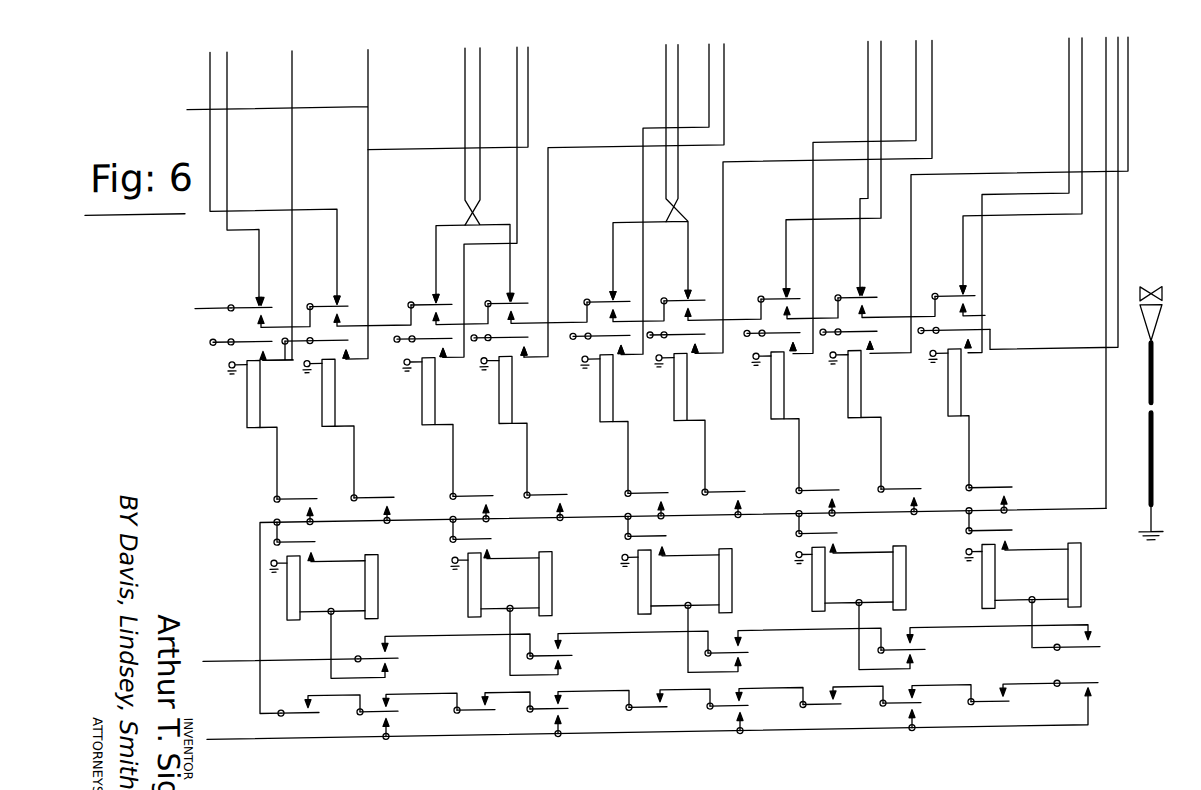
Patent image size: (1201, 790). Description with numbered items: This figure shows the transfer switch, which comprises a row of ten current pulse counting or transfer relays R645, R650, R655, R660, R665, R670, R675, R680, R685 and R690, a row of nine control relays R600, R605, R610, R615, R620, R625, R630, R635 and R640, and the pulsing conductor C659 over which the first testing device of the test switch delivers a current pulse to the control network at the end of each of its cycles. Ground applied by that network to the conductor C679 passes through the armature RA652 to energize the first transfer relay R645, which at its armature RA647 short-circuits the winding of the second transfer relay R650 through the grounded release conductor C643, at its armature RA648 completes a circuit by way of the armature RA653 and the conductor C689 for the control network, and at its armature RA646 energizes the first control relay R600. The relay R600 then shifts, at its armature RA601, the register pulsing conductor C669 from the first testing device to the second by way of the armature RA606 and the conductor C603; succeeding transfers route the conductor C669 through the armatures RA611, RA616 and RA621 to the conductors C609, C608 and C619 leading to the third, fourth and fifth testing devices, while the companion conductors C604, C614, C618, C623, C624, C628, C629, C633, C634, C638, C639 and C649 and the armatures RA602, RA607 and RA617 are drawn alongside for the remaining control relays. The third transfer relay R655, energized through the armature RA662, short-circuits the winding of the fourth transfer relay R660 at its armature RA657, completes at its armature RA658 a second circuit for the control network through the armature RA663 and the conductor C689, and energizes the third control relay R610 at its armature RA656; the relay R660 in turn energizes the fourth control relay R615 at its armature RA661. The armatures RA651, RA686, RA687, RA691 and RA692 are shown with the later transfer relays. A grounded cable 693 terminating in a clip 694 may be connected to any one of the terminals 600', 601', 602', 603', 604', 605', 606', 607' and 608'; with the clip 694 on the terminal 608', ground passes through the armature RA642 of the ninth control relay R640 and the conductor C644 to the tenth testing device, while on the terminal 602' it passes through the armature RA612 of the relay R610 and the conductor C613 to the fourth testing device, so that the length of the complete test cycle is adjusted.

The conductor C603 is at (210, 73).
The conductor C604 is at (227, 92).
The pulsing conductor C659 is at (368, 75).
The conductor C608 is at (465, 74).
The conductor C609 is at (480, 99).
The conductor C613 is at (528, 73).
The conductor C614 is at (528, 105).
The conductor C618 is at (666, 75).
The conductor C619 is at (678, 99).
The conductor C623 is at (709, 71).
The conductor C624 is at (724, 104).
The conductor C628 is at (868, 78).
The conductor C629 is at (881, 102).
The conductor C633 is at (916, 80).
The conductor C634 is at (932, 103).
The conductor C638 is at (1069, 82).
The conductor C639 is at (1082, 104).
The release conductor C643 is at (1106, 114).
The conductor C644 is at (1118, 92).
The conductor C649 is at (1128, 70).
The register pulsing conductor C669 is at (195, 308).
The conductor C679 is at (254, 660).
The conductor C689 is at (266, 739).
The armature RA601 is at (260, 306).
The relay armature contact RA602 is at (253, 340).
The armature RA606 is at (337, 304).
The relay armature contact RA607 is at (339, 359).
The armature RA611 is at (432, 306).
The operated armature RA612 is at (441, 358).
The armature RA616 is at (508, 306).
The relay armature contact RA617 is at (521, 358).
The armature RA621 is at (610, 306).
The armature RA642 is at (990, 342).
The armature RA646 is at (323, 488).
The armature RA647 is at (313, 547).
The armature RA648 is at (319, 716).
The relay armature contact RA651 is at (400, 488).
The armature RA652 is at (392, 664).
The armature RA653 is at (407, 716).
The armature RA656 is at (499, 488).
The armature RA657 is at (488, 545).
The armature RA658 is at (492, 714).
The armature RA661 is at (537, 499).
The armature RA662 is at (565, 665).
The armature RA663 is at (578, 713).
The relay armature contact RA686 is at (1010, 497).
The relay armature contact RA687 is at (1008, 543).
The relay armature contact RA691 is at (1100, 668).
The relay armature contact RA692 is at (1082, 700).
The first control relay R600 is at (267, 430).
The control relay R605 is at (342, 428).
The third control relay R610 is at (442, 427).
The fourth control relay R615 is at (520, 426).
The control relay R620 is at (620, 424).
The control relay R625 is at (696, 423).
The control relay R630 is at (792, 421).
The control relay R635 is at (868, 420).
The ninth control relay R640 is at (969, 418).
The first transfer relay R645 is at (329, 616).
The second transfer relay R650 is at (394, 586).
The third transfer relay R655 is at (506, 613).
The fourth transfer relay R660 is at (571, 583).
The fifth transfer relay R665 is at (681, 611).
The current pulse counting relay R670 is at (749, 580).
The current pulse counting relay R675 is at (854, 608).
The current pulse counting relay R680 is at (922, 577).
The ninth transfer relay R685 is at (1016, 596).
The tenth transfer relay R690 is at (1097, 574).
The terminal 600' is at (214, 368).
The terminal 601' is at (289, 366).
The terminal 602' is at (392, 369).
The terminal 603' is at (477, 366).
The terminal 604' is at (567, 364).
The terminal 605' is at (639, 361).
The terminal 606' is at (722, 359).
The terminal 607' is at (808, 358).
The terminal 608' is at (907, 355).
The cable 693 is at (1153, 403).
The clip 694 is at (1157, 282).